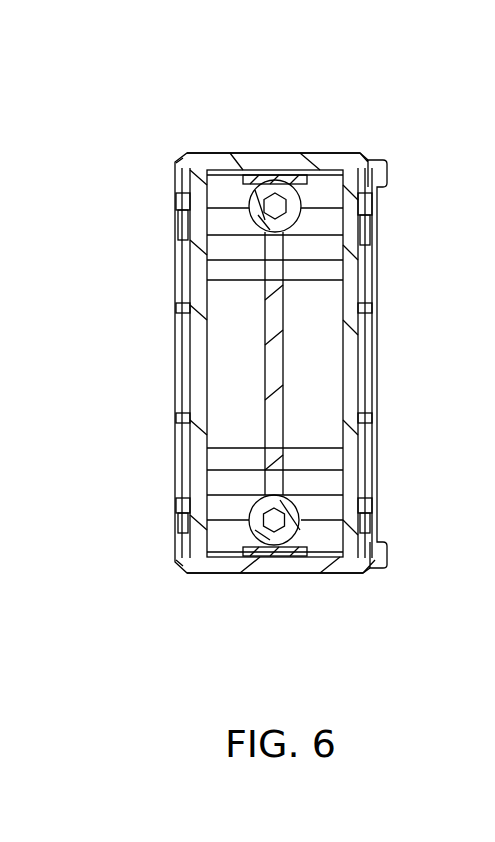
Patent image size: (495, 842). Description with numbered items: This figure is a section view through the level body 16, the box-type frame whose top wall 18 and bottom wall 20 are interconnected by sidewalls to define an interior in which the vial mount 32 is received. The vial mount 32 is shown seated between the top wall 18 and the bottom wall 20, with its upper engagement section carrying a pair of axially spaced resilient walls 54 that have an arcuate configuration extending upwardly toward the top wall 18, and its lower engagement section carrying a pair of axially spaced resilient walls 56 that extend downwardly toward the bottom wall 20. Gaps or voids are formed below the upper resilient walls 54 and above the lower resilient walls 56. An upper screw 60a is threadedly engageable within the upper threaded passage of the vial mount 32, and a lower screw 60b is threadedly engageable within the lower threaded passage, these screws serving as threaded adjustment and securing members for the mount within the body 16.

The level body 16 is at (183, 148).
The top wall 18 is at (272, 152).
The bottom wall 20 is at (272, 573).
The vial mount 32 is at (348, 300).
The upper resilient walls 54 is at (283, 175).
The lower resilient walls 56 is at (291, 556).
The upper screw 60a is at (292, 187).
The lower screw 60b is at (296, 533).